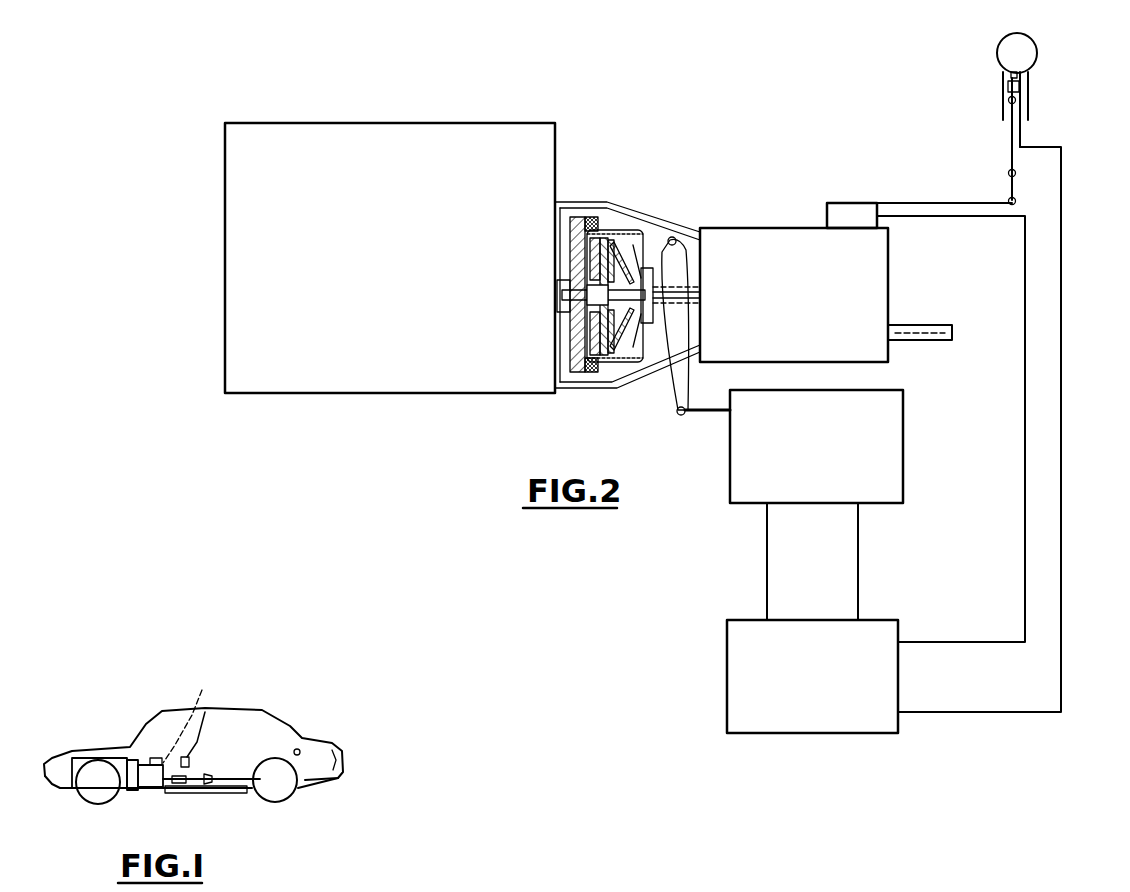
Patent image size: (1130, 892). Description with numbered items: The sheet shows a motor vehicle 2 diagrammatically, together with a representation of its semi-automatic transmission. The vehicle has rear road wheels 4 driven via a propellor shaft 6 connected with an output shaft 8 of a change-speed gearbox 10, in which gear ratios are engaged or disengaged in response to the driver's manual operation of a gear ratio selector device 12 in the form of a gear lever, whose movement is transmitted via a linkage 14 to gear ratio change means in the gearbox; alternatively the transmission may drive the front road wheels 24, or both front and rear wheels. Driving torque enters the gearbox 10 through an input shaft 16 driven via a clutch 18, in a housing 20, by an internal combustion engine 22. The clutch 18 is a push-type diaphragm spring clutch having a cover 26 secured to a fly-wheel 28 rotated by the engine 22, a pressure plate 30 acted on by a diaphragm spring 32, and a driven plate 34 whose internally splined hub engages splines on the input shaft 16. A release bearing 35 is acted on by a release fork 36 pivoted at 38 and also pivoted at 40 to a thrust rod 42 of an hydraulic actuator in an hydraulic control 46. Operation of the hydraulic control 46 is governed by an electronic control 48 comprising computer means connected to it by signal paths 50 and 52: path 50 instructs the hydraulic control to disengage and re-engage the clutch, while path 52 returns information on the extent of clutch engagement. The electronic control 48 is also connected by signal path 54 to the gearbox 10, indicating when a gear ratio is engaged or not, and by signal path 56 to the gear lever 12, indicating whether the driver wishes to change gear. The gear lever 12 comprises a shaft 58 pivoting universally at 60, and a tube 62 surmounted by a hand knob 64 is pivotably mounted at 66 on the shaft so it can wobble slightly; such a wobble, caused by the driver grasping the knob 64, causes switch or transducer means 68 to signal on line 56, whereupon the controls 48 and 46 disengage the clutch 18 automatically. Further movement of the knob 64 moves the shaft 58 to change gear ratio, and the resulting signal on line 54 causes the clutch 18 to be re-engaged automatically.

In FIG. 1, the motor vehicle 2 is at (275, 705).
In FIG. 1, the rear road wheels 4 is at (297, 796).
In FIG. 1, the propellor shaft 6 is at (237, 792).
In FIG. 2, the output shaft 8 is at (942, 324).
In FIG. 1, the output shaft 8 is at (165, 790).
In FIG. 2, the change-speed gearbox 10 is at (877, 262).
In FIG. 1, the change-speed gearbox 10 is at (147, 778).
In FIG. 2, the gear ratio selector device 12 is at (1000, 58).
In FIG. 1, the gear ratio selector device 12 is at (208, 712).
In FIG. 2, the linkage 14 is at (908, 200).
In FIG. 1, the linkage 14 is at (202, 700).
In FIG. 2, the input shaft 16 is at (692, 294).
In FIG. 2, the clutch 18 is at (614, 224).
In FIG. 2, the housing 20 is at (607, 203).
In FIG. 1, the housing 20 is at (134, 758).
In FIG. 2, the internal combustion engine 22 is at (555, 130).
In FIG. 1, the internal combustion engine 22 is at (78, 758).
In FIG. 1, the front road wheels 24 is at (88, 800).
In FIG. 2, the cover 26 is at (622, 364).
In FIG. 2, the fly-wheel 28 is at (578, 372).
In FIG. 2, the pressure plate 30 is at (618, 232).
In FIG. 2, the diaphragm spring 32 is at (660, 228).
In FIG. 2, the driven plate 34 is at (603, 372).
In FIG. 2, the release bearing 35 is at (658, 320).
In FIG. 2, the release fork 36 is at (680, 335).
In FIG. 2, the pivot 38 is at (680, 243).
In FIG. 2, the pivot 40 is at (680, 416).
In FIG. 2, the thrust rod 42 is at (714, 414).
In FIG. 2, the hydraulic control 46 is at (830, 460).
In FIG. 2, the electronic control 48 is at (826, 693).
In FIG. 2, the signal path 50 is at (861, 557).
In FIG. 2, the signal path 52 is at (770, 578).
In FIG. 2, the signal path 54 is at (1025, 356).
In FIG. 2, the signal path 56 is at (1061, 290).
In FIG. 2, the shaft 58 is at (1010, 153).
In FIG. 2, the universal pivot 60 is at (1008, 174).
In FIG. 2, the tube 62 is at (1003, 80).
In FIG. 2, the hand knob 64 is at (1034, 55).
In FIG. 2, the pivot mounting 66 is at (1008, 100).
In FIG. 2, the switch or transducer means 68 is at (1019, 86).